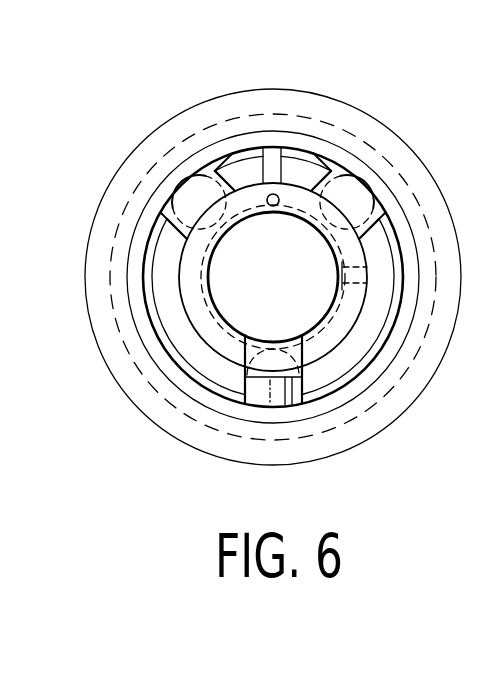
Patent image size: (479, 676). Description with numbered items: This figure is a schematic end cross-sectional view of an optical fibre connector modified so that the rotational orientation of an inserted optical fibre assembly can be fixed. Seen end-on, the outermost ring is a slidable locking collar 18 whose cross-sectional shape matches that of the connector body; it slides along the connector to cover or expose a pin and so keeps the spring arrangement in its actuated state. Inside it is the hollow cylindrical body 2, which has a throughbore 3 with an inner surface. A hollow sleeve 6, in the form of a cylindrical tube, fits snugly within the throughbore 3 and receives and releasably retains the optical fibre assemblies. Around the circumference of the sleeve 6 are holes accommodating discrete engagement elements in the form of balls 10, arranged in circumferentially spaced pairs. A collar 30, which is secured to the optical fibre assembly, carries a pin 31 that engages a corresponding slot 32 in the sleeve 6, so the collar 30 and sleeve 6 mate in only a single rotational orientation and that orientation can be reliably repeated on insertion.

The locking collar 18 is at (133, 167).
The hollow cylindrical body 2 is at (203, 150).
The throughbore 3 is at (168, 366).
The slot 32 is at (273, 160).
The balls 10 is at (357, 193).
The sleeve 6 is at (345, 365).
The collar 30 is at (218, 343).
The pin 31 is at (273, 207).